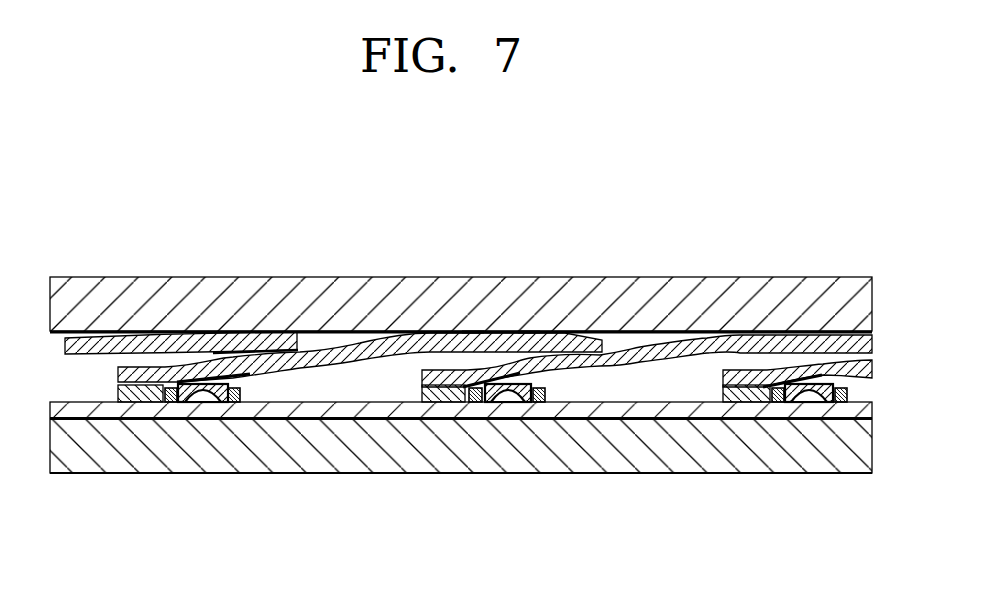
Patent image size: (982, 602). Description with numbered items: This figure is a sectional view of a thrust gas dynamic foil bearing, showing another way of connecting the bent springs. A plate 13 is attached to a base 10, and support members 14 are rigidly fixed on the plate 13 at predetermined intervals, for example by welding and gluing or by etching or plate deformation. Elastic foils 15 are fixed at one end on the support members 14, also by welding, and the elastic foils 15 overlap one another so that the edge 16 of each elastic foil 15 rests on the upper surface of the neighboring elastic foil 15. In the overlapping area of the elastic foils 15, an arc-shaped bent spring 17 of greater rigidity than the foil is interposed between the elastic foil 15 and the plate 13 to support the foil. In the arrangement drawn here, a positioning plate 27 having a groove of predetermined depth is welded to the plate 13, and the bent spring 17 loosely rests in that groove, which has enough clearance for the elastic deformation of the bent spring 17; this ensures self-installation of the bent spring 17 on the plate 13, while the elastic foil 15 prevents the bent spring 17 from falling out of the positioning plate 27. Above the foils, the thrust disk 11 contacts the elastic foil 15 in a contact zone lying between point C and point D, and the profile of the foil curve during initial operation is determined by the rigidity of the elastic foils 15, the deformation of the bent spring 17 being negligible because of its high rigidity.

The base 10 is at (593, 460).
The thrust disk 11 is at (242, 292).
The plate 13 is at (410, 412).
The support member 14 is at (127, 402).
The elastic foil 15 is at (332, 352).
The edge 16 is at (298, 347).
The bent spring 17 is at (206, 392).
The positioning plate 27 is at (534, 402).
The point C is at (473, 330).
The point D is at (528, 331).